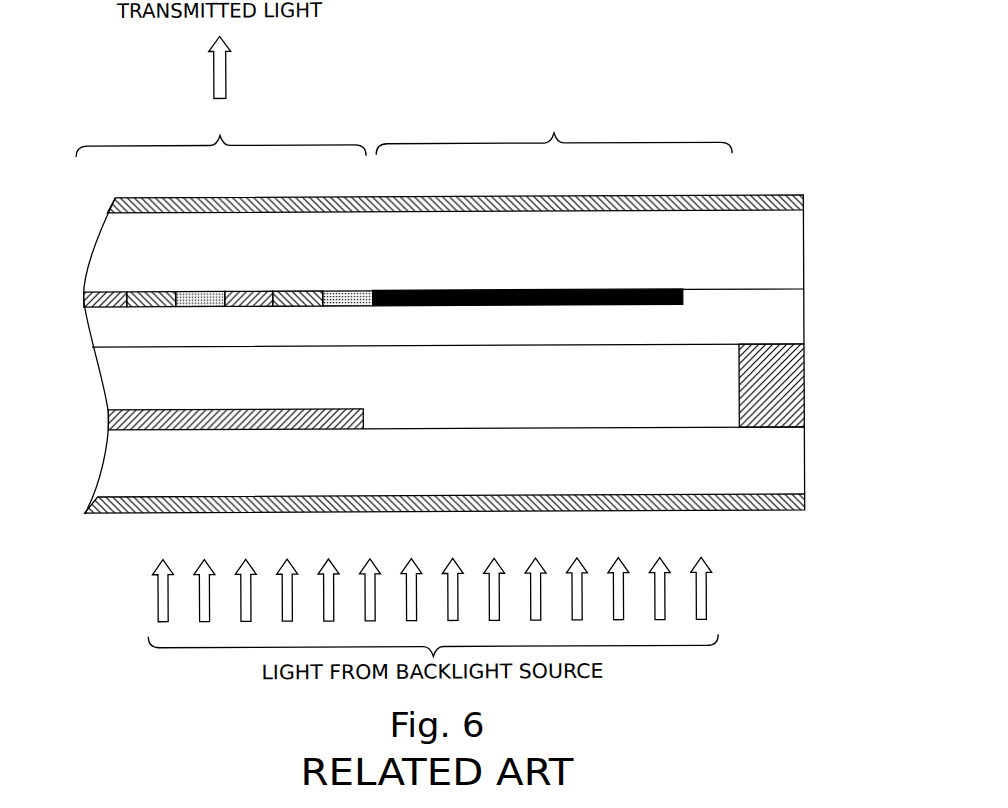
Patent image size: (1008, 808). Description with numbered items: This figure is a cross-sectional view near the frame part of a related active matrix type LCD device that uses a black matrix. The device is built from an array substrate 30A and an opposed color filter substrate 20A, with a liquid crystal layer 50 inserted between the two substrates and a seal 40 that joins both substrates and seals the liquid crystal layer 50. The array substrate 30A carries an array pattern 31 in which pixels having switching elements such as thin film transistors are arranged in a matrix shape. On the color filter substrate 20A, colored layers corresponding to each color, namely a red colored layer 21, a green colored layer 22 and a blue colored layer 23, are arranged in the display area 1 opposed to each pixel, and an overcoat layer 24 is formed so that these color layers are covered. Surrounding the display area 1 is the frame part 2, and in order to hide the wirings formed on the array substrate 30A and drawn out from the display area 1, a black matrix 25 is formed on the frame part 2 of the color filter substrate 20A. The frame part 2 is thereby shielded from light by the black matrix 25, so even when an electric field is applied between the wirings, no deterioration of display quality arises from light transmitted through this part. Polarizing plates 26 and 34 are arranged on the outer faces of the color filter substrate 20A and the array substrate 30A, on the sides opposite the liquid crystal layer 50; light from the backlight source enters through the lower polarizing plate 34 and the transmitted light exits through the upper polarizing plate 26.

The display area 1 is at (221, 133).
The frame part 2 is at (554, 132).
The color filter substrate 20A is at (783, 261).
The red (R) colored layer 21 is at (257, 292).
The green (G) colored layer 22 is at (315, 292).
The blue (B) colored layer 23 is at (196, 292).
The overcoat layer 24 is at (783, 329).
The black matrix 25 is at (582, 292).
The polarizing plate 26 is at (780, 200).
The array substrate 30A is at (745, 482).
The array pattern 31 is at (185, 430).
The polarizing plate 34 is at (790, 516).
The seal 40 is at (787, 377).
The liquid crystal layer 50 is at (110, 372).